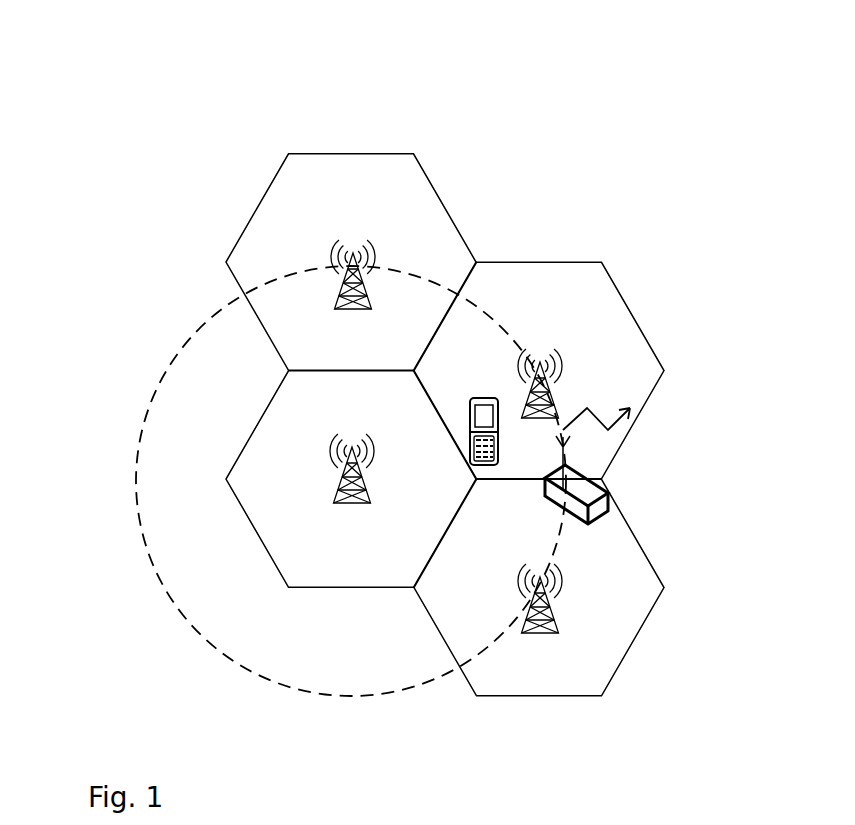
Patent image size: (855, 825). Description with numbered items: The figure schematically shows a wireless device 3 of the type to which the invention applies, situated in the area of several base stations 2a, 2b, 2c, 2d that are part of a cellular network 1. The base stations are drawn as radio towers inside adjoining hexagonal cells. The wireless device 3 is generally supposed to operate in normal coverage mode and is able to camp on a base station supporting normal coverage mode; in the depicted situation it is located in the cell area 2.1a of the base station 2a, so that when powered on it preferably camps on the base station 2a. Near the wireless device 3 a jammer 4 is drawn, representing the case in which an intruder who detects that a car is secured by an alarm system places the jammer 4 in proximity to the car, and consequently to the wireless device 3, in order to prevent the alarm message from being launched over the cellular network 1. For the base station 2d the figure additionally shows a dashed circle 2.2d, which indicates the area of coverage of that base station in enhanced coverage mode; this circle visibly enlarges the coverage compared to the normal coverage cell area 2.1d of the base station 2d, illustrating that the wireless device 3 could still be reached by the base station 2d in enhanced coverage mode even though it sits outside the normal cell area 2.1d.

The cellular network 1 is at (588, 105).
The base station 2a is at (560, 355).
The base station 2b is at (378, 235).
The base station 2c is at (570, 593).
The base station 2d is at (327, 477).
The cell area 2.1a is at (642, 355).
The normal coverage cell area 2.1d is at (268, 527).
The circle indicating area of coverage in enhanced coverage mode 2.2d is at (162, 438).
The wireless device 3 is at (467, 412).
The jammer 4 is at (587, 468).